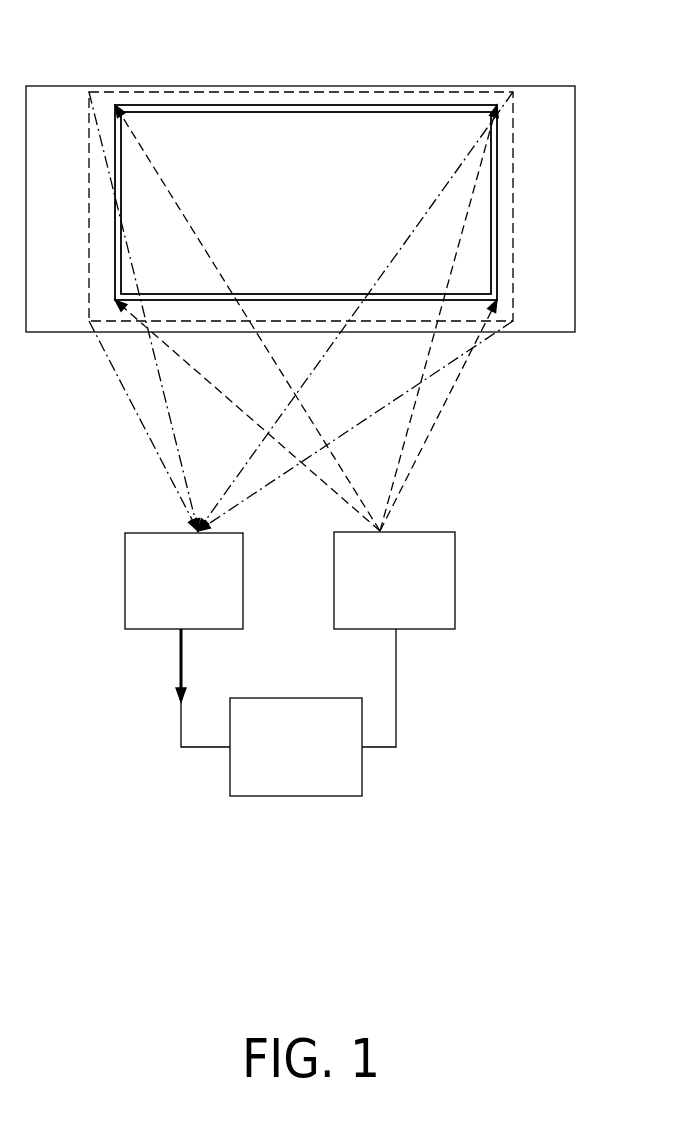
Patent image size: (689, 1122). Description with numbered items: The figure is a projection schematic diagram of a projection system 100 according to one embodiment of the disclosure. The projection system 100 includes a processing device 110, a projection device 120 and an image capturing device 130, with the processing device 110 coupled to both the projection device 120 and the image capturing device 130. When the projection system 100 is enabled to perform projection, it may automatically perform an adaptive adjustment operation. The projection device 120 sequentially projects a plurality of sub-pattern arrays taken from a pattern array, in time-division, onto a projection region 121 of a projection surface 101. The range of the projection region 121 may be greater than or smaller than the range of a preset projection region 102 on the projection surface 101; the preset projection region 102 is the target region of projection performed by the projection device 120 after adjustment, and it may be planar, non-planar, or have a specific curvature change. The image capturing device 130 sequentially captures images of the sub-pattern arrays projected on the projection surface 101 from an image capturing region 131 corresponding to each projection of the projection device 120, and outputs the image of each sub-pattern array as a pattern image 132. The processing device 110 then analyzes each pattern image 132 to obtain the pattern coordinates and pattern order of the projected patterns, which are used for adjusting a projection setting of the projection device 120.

The projection system 100 is at (556, 841).
The projection surface 101 is at (508, 86).
The preset projection region 102 is at (262, 108).
The processing device 110 is at (362, 768).
The projection device 120 is at (455, 586).
The projection region 121 is at (453, 105).
The image capturing device 130 is at (125, 581).
The image capturing region 131 is at (383, 92).
The pattern image 132 is at (178, 676).